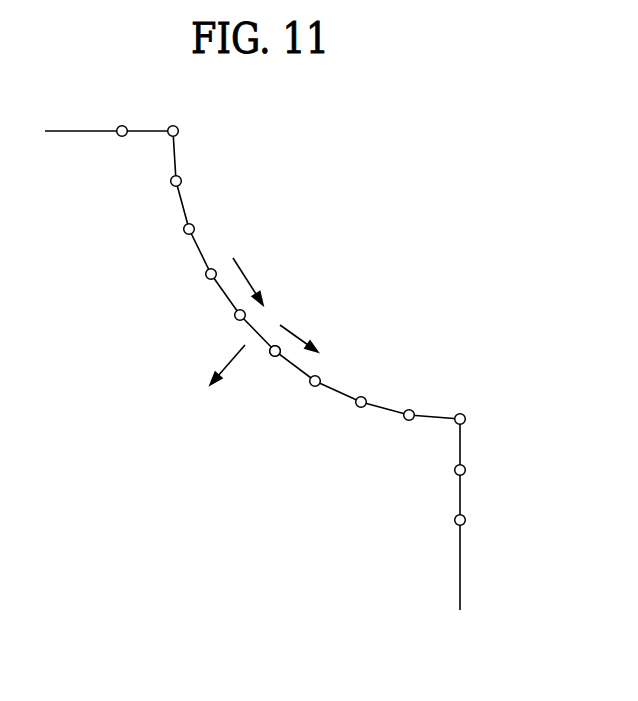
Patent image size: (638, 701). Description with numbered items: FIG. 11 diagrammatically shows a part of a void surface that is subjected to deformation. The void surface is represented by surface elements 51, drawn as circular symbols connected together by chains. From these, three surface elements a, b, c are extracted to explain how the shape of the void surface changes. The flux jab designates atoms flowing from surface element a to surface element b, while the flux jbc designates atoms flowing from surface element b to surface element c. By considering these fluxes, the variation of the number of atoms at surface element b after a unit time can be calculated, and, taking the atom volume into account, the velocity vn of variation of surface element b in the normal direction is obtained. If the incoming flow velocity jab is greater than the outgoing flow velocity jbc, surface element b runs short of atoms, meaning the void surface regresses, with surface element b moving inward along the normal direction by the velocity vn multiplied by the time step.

The surface elements 51 is at (178, 178).
The surface element a is at (218, 287).
The surface element b is at (250, 329).
The surface element c is at (286, 362).
The flux directing from a to b jab is at (261, 277).
The flux directing from b to c jbc is at (311, 330).
The velocity of variations of the surface element in the normal direction vn is at (235, 372).